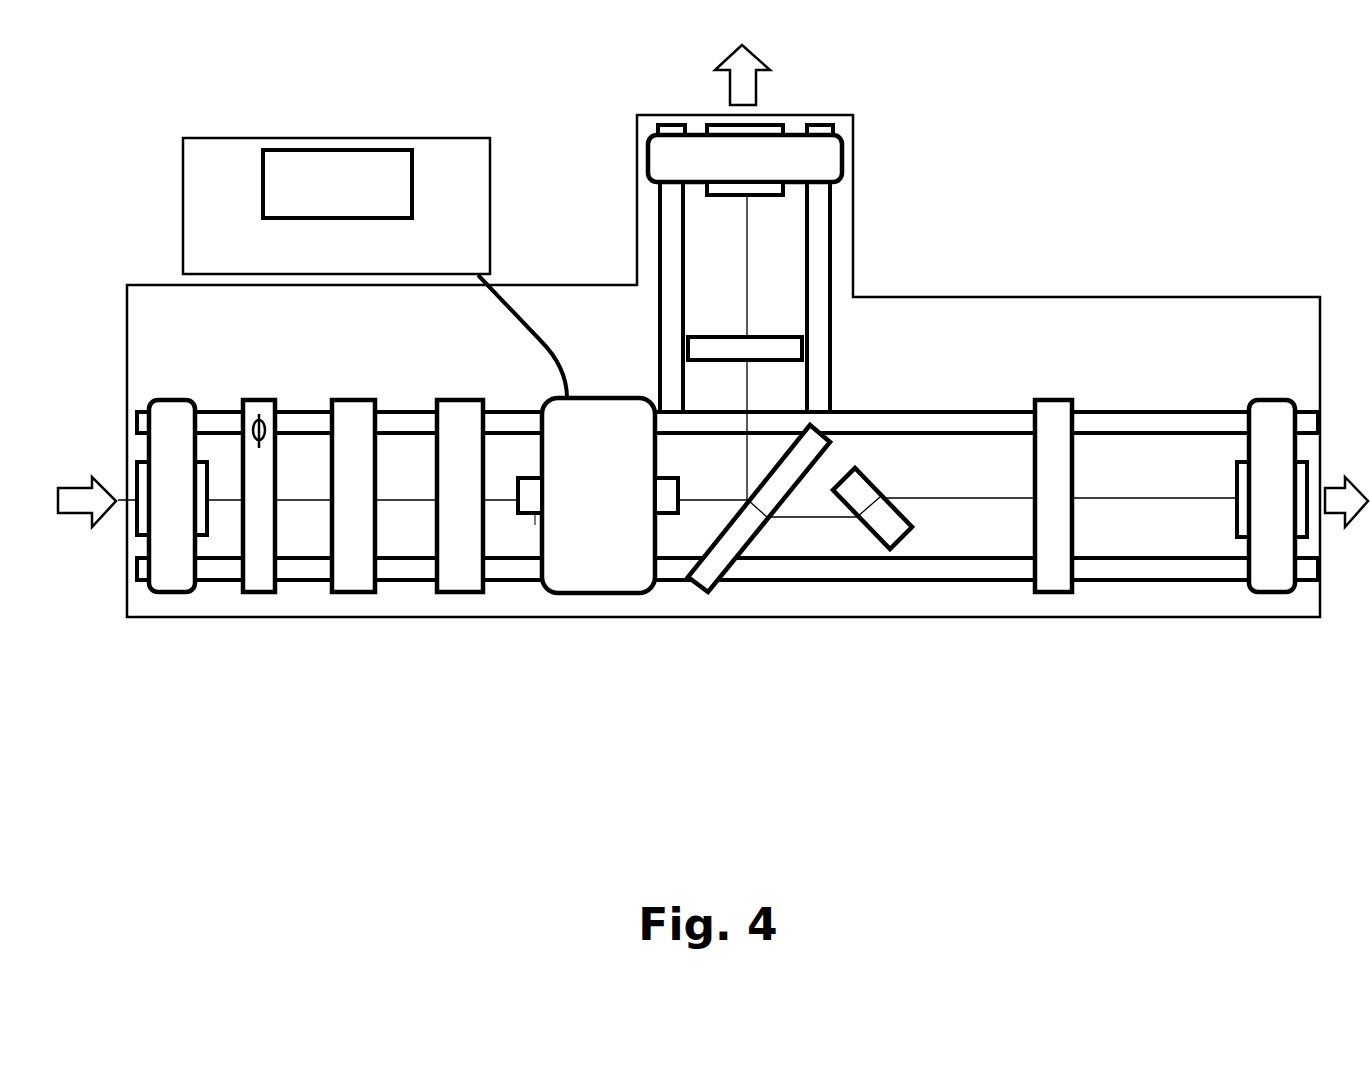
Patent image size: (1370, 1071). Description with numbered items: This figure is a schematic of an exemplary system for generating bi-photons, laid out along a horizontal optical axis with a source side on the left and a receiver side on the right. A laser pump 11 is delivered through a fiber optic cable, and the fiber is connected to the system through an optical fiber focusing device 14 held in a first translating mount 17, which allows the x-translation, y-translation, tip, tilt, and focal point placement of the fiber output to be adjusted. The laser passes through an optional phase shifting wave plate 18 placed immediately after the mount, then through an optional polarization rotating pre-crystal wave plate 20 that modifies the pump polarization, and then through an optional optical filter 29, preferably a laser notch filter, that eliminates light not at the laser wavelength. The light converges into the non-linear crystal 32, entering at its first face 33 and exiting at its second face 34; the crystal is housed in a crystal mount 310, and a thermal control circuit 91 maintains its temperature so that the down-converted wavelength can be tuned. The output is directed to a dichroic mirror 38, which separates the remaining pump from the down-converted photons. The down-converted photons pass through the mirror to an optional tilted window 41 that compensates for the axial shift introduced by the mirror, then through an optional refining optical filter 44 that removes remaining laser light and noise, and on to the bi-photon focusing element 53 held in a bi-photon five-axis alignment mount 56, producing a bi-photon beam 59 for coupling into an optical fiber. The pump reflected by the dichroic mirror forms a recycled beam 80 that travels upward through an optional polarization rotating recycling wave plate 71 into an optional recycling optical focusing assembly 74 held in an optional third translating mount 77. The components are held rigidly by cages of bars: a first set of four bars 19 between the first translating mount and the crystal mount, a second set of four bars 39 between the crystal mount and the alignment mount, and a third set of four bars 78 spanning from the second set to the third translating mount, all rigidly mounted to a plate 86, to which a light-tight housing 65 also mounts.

The laser pump 11 is at (71, 523).
The optical fiber focusing device 14 is at (140, 537).
The first translating mount 17 is at (173, 605).
The phase shifting wave plate 18 is at (263, 605).
The first set of four bars 19 is at (406, 572).
The polarization rotating pre-crystal wave plate 20 is at (354, 605).
The optical filter 29 is at (465, 605).
The non-linear crystal 32 is at (535, 525).
The first face 33 is at (518, 520).
The second face 34 is at (680, 520).
The crystal mount 310 is at (600, 605).
The dichroic mirror 38 is at (710, 568).
The second set of four bars 39 is at (797, 568).
The tilted window 41 is at (887, 545).
The refining optical filter 44 is at (1057, 600).
The bi-photon focusing element 53 is at (1239, 547).
The bi-photon 5-axis alignment mount 56 is at (1273, 605).
The bi-photon beam 59 is at (1352, 535).
The housing 65 is at (1044, 322).
The polarization rotating recycling wave plate 71 is at (695, 328).
The recycling optical focusing assembly 74 is at (700, 190).
The third translating mount 77 is at (662, 157).
The third set of four bars 78 is at (823, 217).
The recycled beam 80 is at (702, 81).
The plate 86 is at (138, 273).
The thermal control circuit 91 is at (229, 172).